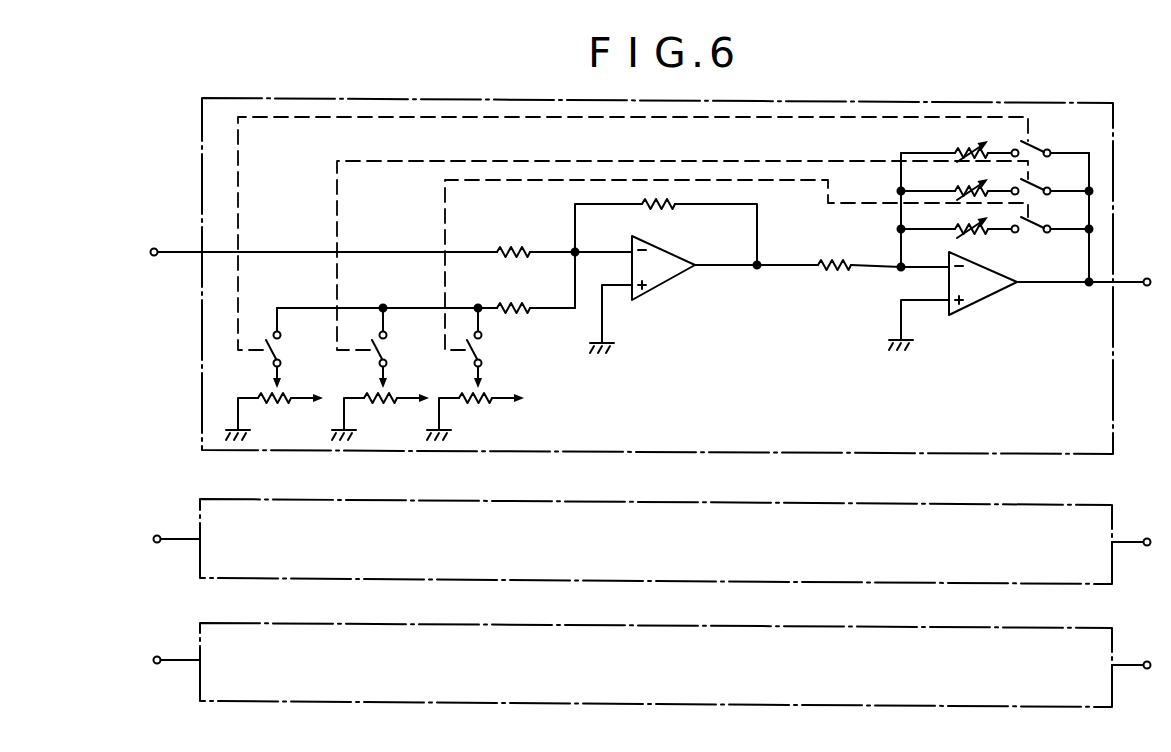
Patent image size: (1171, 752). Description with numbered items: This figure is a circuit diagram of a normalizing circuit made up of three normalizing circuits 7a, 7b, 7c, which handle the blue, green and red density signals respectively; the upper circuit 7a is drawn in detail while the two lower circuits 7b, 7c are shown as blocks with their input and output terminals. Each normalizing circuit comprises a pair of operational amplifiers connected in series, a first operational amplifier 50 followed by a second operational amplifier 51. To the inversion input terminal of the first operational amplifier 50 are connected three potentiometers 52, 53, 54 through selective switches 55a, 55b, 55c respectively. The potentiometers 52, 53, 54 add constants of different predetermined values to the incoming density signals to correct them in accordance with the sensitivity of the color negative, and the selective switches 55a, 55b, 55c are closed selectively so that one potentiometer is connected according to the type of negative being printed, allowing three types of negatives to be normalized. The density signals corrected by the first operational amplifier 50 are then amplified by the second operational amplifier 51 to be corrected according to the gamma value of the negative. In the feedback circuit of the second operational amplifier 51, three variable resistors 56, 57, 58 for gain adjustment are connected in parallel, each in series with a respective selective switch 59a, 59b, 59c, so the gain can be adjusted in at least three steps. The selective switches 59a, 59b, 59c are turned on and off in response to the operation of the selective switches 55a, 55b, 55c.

The normalizing circuit 7a is at (979, 103).
The normalizing circuit 7b is at (963, 503).
The normalizing circuit 7c is at (963, 627).
The first operational amplifier 50 is at (658, 293).
The second operational amplifier 51 is at (975, 308).
The potentiometer 52 is at (479, 401).
The potentiometer 53 is at (384, 401).
The potentiometer 54 is at (278, 401).
The selective switch 55a is at (487, 338).
The selective switch 55b is at (392, 338).
The selective switch 55c is at (286, 338).
The variable resistor 56 is at (980, 241).
The variable resistor 57 is at (961, 184).
The variable resistor 58 is at (961, 141).
The selective switch 59a is at (1032, 225).
The selective switch 59b is at (1032, 186).
The selective switch 59c is at (1040, 145).